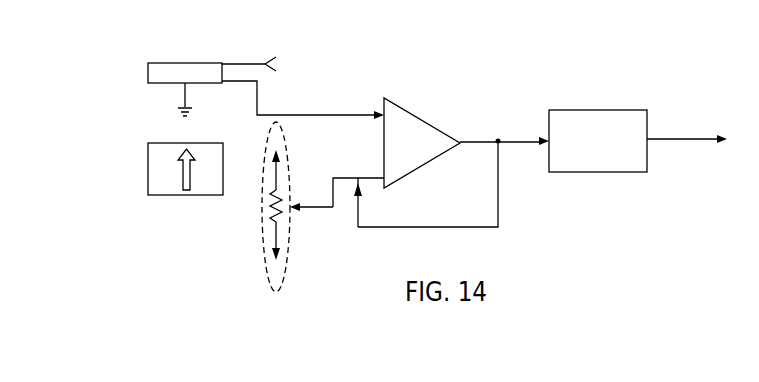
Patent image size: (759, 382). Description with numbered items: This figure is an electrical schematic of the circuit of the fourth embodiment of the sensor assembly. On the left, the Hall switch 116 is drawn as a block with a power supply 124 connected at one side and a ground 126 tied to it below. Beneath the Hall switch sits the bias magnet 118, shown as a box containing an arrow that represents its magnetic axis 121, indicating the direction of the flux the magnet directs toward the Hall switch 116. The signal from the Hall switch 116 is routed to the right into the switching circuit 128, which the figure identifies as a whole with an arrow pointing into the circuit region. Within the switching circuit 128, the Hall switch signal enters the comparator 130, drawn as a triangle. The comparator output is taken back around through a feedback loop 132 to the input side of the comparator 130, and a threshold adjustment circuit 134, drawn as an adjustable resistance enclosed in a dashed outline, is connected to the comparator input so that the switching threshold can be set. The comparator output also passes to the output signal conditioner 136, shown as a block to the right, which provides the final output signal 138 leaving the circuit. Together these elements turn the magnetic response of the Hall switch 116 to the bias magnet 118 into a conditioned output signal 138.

The Hall switch 116 is at (181, 63).
The bias magnet 118 is at (163, 143).
The magnetic axis 121 is at (184, 176).
The power supply 124 is at (238, 64).
The ground 126 is at (186, 93).
The switching circuit 128 is at (456, 48).
The comparator 130 is at (412, 113).
The feedback loop 132 is at (415, 227).
The threshold adjustment circuit 134 is at (290, 258).
The output signal conditioner 136 is at (620, 110).
The output signal 138 is at (672, 138).